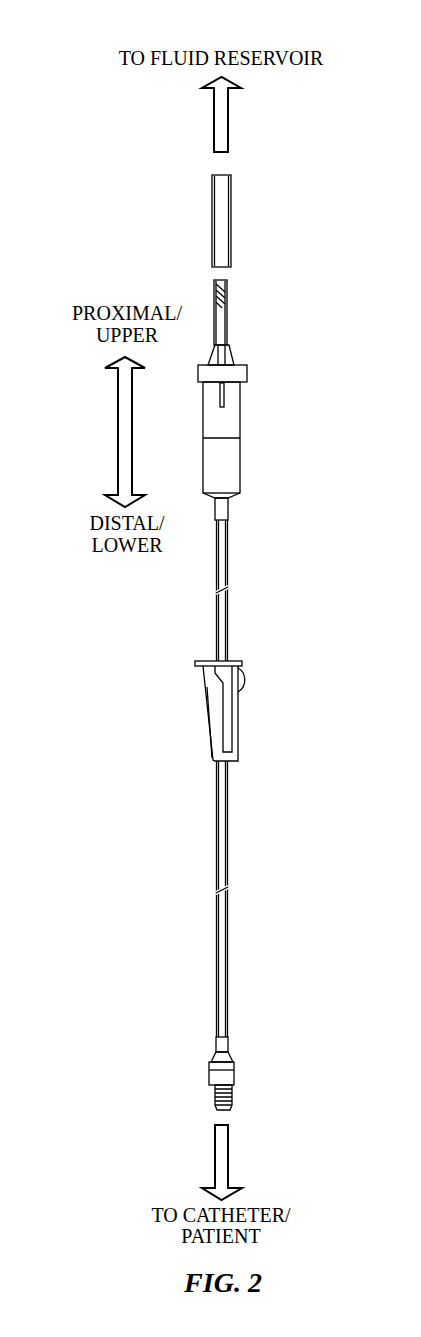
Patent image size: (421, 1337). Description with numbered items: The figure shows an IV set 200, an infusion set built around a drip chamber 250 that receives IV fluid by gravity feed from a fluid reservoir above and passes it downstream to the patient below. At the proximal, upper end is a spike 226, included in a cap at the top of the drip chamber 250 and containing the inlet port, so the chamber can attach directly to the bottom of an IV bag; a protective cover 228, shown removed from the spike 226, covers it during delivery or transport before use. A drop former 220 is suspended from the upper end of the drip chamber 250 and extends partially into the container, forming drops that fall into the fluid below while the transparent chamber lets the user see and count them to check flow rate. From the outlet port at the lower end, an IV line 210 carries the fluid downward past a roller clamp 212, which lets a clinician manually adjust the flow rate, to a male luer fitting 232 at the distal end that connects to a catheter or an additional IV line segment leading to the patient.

The IV set 200 is at (147, 34).
The protective cover 228 is at (231, 228).
The spike 226 is at (228, 320).
The drip chamber 250 is at (239, 448).
The drop former 220 is at (225, 399).
The roller clamp 212 is at (233, 713).
The IV line 210 is at (228, 920).
The male luer fitting 232 is at (230, 1069).